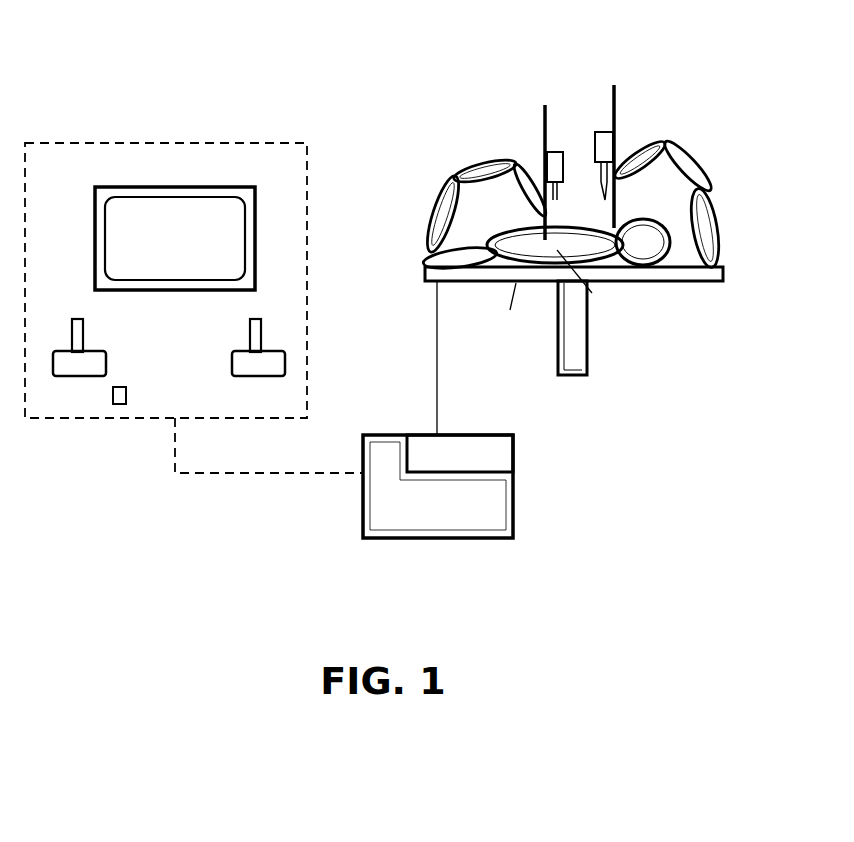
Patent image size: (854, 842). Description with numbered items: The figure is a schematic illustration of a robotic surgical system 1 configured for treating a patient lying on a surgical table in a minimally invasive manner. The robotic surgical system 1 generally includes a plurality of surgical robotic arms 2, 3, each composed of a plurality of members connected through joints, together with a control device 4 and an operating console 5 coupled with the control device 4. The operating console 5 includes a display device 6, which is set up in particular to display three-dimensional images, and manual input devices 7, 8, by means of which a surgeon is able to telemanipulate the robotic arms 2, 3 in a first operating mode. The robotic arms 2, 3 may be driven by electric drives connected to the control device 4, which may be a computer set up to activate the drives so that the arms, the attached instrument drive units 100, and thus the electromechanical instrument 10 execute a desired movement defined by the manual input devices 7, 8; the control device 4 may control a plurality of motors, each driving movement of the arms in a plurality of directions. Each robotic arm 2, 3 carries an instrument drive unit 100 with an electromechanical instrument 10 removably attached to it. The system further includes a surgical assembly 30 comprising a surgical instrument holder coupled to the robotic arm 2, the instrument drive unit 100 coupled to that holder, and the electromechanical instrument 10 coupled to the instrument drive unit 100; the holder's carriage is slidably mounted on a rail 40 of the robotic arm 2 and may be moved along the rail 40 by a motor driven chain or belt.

The robotic surgical system 1 is at (385, 276).
The surgical robotic arm 2 is at (461, 180).
The surgical robotic arm 3 is at (708, 150).
The control device 4 is at (430, 501).
The operating console 5 is at (166, 257).
The display device 6 is at (172, 246).
The manual input device 7 is at (63, 367).
The manual input device 8 is at (258, 365).
The electromechanical instrument 10 is at (563, 205).
The surgical assembly 30 is at (537, 213).
The rail 40 is at (544, 120).
The instrument drive unit 100 is at (556, 146).